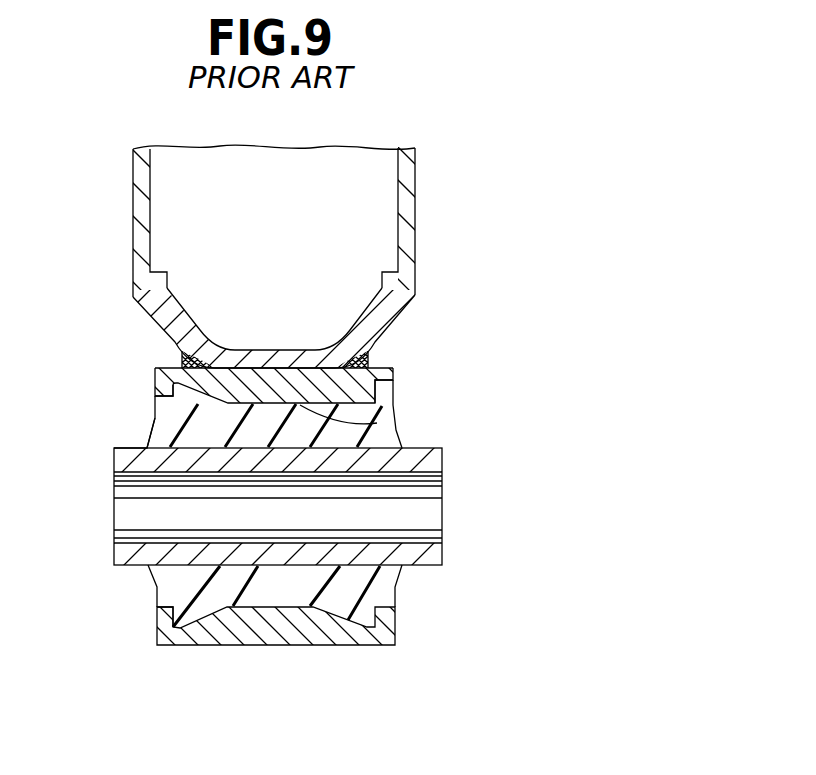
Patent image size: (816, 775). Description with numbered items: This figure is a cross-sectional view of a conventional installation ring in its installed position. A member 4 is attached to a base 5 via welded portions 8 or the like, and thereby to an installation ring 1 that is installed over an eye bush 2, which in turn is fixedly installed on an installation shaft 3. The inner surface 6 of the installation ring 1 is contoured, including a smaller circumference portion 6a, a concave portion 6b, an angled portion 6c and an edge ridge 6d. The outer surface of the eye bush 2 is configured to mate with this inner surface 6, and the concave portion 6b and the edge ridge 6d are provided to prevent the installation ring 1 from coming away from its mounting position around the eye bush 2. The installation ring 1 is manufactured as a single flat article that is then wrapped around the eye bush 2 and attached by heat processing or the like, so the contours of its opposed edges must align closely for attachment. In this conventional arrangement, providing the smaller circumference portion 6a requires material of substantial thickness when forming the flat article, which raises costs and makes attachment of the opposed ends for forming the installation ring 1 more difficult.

The installation ring 1 is at (395, 385).
The eye bush 2 is at (160, 574).
The installation shaft 3 is at (125, 550).
The member 4 is at (275, 257).
The base 5 is at (380, 337).
The inner surface 6 is at (253, 543).
The smaller circumference portion 6a is at (375, 403).
The concave portion 6b is at (158, 397).
The angled portion 6c is at (118, 458).
The edge ridge 6d is at (165, 615).
The welded portions 8 is at (182, 355).